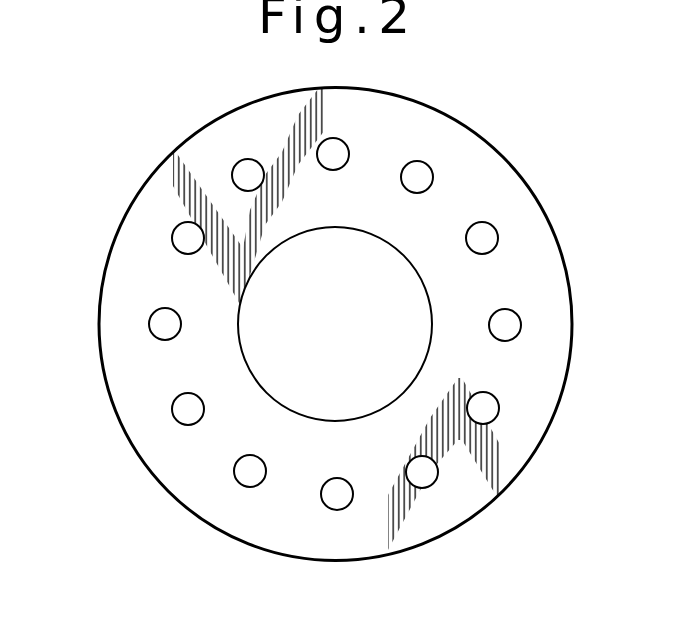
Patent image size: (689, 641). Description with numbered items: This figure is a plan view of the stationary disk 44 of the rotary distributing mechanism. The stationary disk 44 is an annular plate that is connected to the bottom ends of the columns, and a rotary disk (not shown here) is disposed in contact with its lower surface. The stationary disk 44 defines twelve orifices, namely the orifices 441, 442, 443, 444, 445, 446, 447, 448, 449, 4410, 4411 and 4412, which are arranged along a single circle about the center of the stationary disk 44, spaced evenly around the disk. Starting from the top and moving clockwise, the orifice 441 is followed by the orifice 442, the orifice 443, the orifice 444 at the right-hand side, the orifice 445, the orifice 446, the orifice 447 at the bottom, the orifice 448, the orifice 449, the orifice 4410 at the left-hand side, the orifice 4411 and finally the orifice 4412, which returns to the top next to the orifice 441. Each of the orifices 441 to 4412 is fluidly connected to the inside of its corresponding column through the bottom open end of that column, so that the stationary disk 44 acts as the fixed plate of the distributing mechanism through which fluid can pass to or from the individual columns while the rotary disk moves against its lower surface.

The stationary disk 44 is at (422, 126).
The orifice 441 is at (345, 150).
The orifice 442 is at (431, 177).
The orifice 443 is at (494, 236).
The orifice 444 is at (520, 323).
The orifice 445 is at (500, 416).
The orifice 446 is at (427, 488).
The orifice 447 is at (335, 512).
The orifice 448 is at (253, 487).
The orifice 449 is at (185, 423).
The orifice 4410 is at (148, 324).
The orifice 4411 is at (171, 239).
The orifice 4412 is at (235, 172).